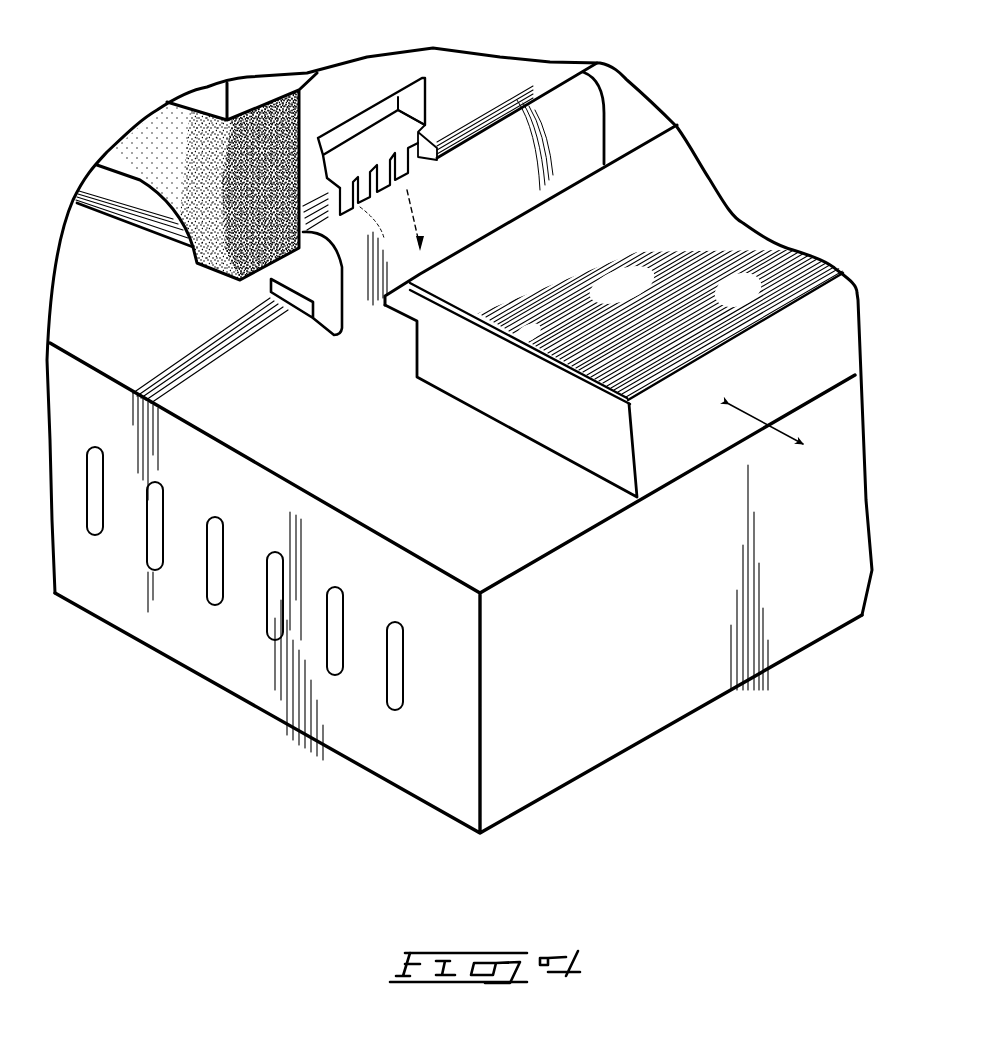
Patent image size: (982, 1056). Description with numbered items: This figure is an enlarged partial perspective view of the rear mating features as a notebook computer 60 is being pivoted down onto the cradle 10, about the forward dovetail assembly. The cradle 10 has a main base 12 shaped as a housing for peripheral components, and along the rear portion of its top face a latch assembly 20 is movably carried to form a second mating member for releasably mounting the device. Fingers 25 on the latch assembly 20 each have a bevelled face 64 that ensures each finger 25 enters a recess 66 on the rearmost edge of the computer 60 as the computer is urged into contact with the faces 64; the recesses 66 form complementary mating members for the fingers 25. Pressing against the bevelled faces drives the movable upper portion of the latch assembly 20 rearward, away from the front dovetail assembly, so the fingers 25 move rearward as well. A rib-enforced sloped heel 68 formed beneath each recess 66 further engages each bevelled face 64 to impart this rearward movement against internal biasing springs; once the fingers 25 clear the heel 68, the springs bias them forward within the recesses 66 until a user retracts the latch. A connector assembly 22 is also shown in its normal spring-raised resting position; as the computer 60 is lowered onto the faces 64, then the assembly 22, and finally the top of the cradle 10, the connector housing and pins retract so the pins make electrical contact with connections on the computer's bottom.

The cradle 10 is at (200, 640).
The main base 12 is at (445, 745).
The latch assembly 20 is at (437, 435).
The connector assembly 22 is at (318, 281).
The fingers 25 is at (410, 300).
The notebook computer 60 is at (330, 97).
The bevelled face 64 is at (412, 279).
The recess 66 is at (408, 99).
The sloped heel 68 is at (412, 165).